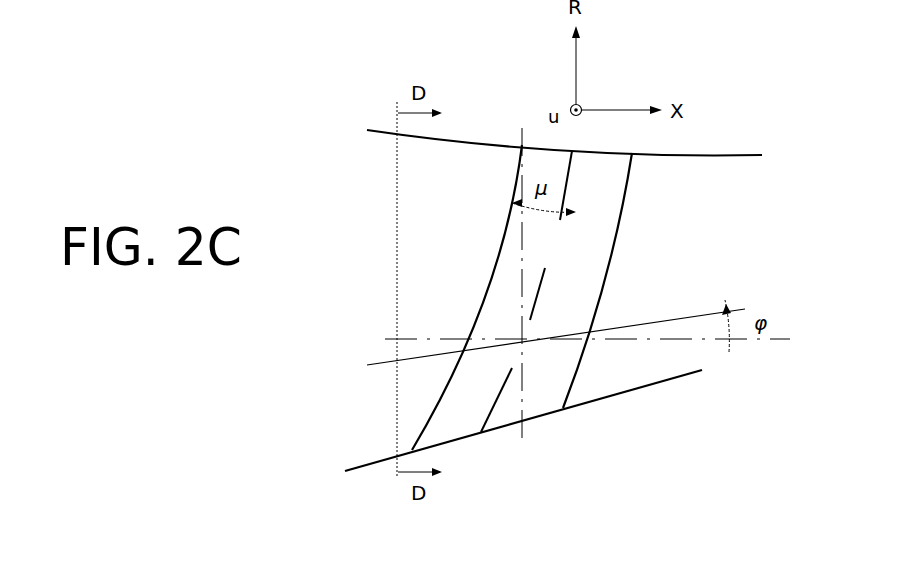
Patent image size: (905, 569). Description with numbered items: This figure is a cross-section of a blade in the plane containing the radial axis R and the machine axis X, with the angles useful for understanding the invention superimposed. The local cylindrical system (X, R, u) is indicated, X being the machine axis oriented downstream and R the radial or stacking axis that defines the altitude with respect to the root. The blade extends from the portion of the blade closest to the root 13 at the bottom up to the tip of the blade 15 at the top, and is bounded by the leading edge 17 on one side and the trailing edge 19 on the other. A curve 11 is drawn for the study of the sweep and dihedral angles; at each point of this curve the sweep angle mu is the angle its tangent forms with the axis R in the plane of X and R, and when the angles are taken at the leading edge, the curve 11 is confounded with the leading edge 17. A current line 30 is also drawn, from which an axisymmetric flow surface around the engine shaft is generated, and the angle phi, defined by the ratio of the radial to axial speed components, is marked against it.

The curve 11 is at (542, 283).
The portion of the blade closest to the root 13 is at (540, 417).
The tip of the blade 15 is at (505, 143).
The leading edge 17 is at (497, 267).
The trailing edge 19 is at (617, 242).
The current line 30 is at (664, 317).